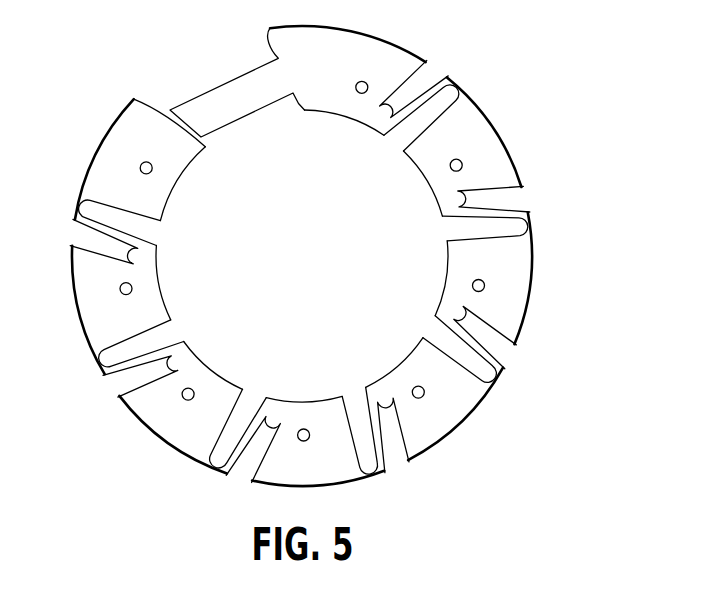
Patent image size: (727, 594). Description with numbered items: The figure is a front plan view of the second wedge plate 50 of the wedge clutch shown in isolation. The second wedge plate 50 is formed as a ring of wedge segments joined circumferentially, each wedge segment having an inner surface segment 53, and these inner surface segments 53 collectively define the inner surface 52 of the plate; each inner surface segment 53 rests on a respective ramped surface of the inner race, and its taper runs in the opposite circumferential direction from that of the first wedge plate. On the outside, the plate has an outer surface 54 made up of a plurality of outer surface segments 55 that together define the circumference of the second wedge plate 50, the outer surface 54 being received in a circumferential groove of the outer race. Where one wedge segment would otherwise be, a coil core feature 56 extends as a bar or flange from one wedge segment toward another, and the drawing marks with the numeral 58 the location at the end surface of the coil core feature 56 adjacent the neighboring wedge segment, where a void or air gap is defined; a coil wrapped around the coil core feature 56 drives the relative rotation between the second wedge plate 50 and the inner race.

The second wedge plate 50 is at (339, 256).
The inner surface 52 is at (426, 183).
The inner surface segments 53 is at (215, 358).
The outer surface 54 is at (443, 128).
The outer surface segments 55 is at (535, 268).
The coil core feature 56 is at (273, 95).
The tab end junction 58 is at (215, 151).